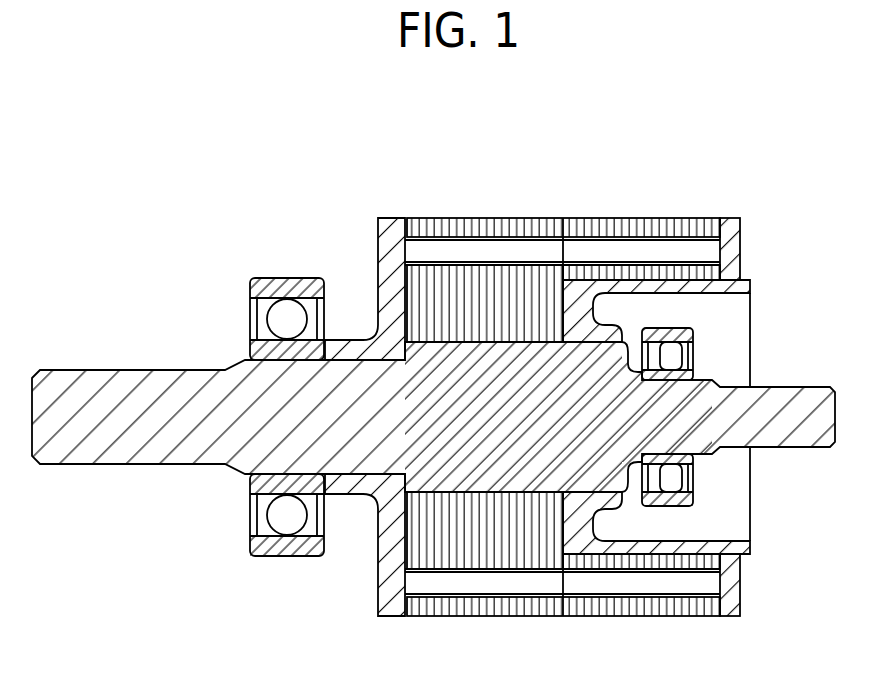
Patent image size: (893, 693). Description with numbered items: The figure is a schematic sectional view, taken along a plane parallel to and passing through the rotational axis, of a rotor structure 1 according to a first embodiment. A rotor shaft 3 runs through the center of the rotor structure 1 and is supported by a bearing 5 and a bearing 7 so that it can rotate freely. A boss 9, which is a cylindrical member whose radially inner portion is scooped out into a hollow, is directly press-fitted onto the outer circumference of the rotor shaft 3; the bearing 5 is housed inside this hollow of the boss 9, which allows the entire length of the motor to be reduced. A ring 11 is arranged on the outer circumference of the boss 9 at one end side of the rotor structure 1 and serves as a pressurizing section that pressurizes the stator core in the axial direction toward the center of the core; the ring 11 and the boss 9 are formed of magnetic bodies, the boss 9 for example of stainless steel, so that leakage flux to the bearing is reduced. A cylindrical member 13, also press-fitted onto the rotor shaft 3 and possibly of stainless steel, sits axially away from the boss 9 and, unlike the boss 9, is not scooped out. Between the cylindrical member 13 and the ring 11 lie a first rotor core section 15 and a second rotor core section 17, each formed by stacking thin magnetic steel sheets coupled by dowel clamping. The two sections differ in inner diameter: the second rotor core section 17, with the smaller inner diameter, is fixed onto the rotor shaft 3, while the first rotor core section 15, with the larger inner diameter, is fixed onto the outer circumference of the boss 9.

The rotor structure 1 is at (165, 161).
The rotor shaft 3 is at (800, 437).
The bearing 5 is at (683, 355).
The bearing 7 is at (250, 312).
The boss 9 is at (735, 313).
The ring 11 is at (730, 244).
The cylindrical member 13 is at (376, 268).
The first rotor core section 15 is at (611, 234).
The second rotor core section 17 is at (464, 234).